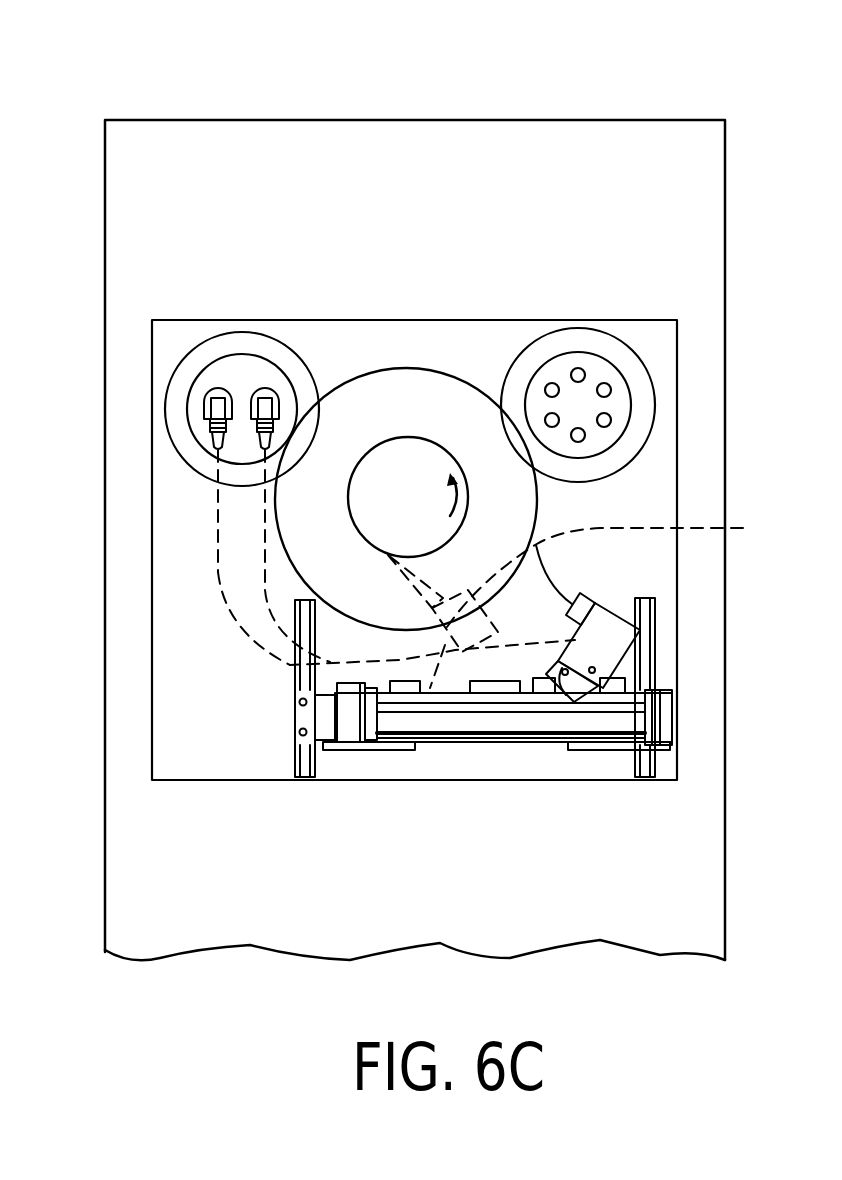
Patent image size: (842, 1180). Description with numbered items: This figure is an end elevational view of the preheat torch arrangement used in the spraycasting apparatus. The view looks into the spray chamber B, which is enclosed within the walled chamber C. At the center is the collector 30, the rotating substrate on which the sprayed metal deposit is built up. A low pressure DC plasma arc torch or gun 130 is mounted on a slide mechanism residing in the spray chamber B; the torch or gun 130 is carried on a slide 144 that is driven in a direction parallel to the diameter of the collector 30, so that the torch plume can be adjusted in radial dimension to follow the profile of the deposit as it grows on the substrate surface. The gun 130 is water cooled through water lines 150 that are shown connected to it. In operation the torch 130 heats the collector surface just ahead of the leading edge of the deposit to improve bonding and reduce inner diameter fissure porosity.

The collector 30 is at (363, 378).
The DC plasma arc torch 130 is at (612, 606).
The slide 144 is at (474, 744).
The water lines 150 is at (265, 590).
The walled chamber C is at (639, 118).
The spray chamber B is at (655, 847).